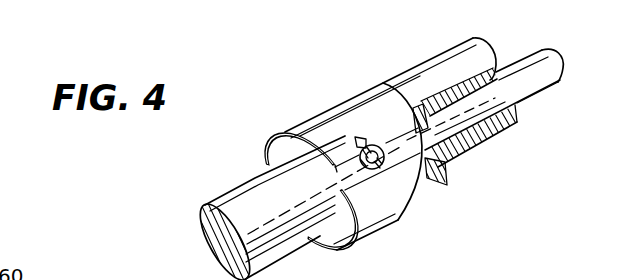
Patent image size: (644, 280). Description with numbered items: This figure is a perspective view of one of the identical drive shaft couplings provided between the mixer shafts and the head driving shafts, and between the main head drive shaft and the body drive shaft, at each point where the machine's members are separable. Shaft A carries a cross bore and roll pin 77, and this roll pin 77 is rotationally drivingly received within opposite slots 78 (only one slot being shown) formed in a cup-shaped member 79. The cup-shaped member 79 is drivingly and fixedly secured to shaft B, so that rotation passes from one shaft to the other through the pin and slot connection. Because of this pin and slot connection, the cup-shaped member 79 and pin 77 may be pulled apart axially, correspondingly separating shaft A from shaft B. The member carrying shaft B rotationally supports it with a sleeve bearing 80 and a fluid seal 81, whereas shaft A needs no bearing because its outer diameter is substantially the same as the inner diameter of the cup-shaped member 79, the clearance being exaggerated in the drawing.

The shaft A is at (251, 207).
The shaft B is at (535, 52).
The roll pin 77 is at (377, 146).
The slots 78 is at (339, 164).
The cup-shaped member 79 is at (403, 203).
The sleeve bearing 80 is at (453, 62).
The fluid seal 81 is at (383, 85).